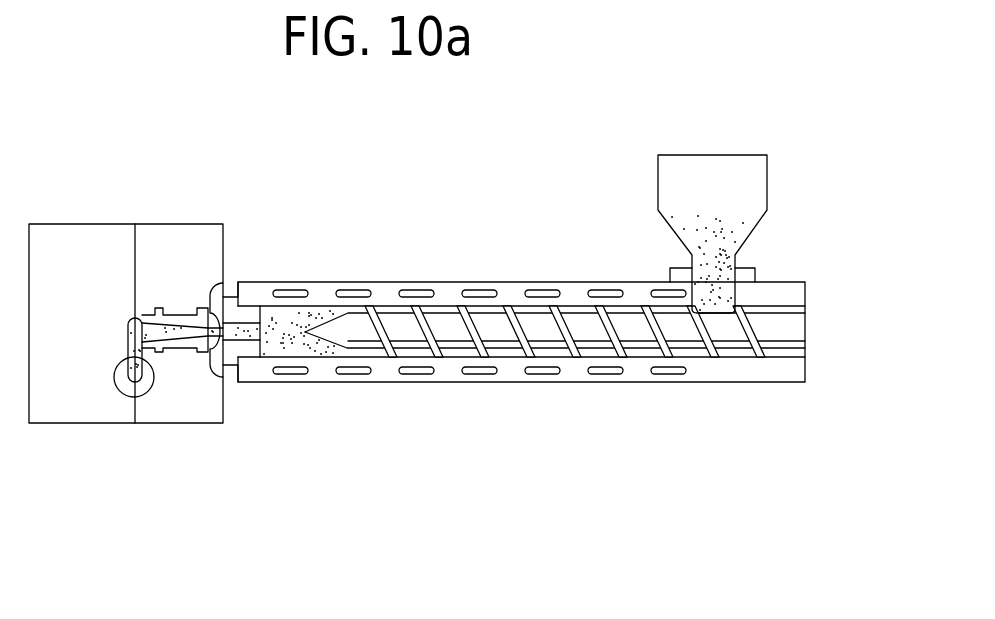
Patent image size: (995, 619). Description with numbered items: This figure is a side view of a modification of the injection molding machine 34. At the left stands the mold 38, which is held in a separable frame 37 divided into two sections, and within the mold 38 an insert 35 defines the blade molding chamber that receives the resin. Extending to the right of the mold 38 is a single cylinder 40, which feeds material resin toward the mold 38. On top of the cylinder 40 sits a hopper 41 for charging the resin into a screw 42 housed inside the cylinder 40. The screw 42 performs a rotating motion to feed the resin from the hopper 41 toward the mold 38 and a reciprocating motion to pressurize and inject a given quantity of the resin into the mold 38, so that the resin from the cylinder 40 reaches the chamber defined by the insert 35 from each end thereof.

The injection molding machine 34 is at (483, 304).
The insert 35 is at (118, 372).
The separable frame 37 is at (158, 236).
The mold 38 is at (144, 434).
The cylinder 40 is at (481, 310).
The hopper 41 is at (758, 196).
The screw 42 is at (543, 343).